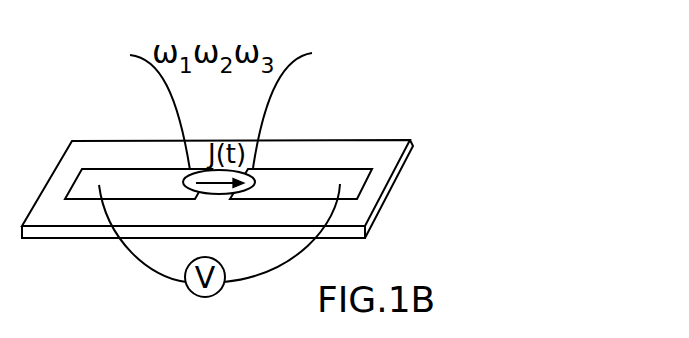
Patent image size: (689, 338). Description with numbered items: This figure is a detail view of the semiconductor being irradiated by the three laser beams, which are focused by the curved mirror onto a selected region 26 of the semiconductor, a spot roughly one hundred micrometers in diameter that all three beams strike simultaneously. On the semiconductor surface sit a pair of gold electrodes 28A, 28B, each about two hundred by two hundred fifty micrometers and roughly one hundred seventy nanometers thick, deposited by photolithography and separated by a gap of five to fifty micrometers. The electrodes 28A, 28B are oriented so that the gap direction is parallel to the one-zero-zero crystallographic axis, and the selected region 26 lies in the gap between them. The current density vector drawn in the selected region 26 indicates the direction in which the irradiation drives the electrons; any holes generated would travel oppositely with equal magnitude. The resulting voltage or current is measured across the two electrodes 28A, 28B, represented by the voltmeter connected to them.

The gold electrode 28A is at (124, 186).
The gold electrode 28B is at (312, 183).
The selected region 26 is at (258, 176).